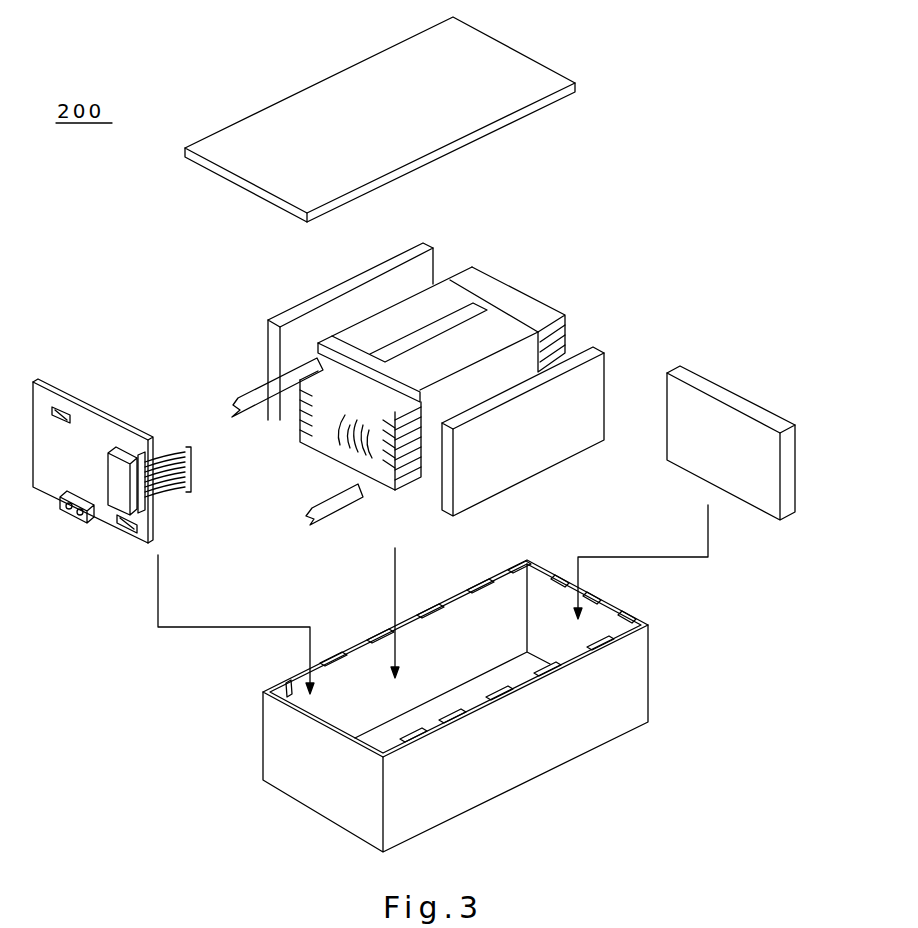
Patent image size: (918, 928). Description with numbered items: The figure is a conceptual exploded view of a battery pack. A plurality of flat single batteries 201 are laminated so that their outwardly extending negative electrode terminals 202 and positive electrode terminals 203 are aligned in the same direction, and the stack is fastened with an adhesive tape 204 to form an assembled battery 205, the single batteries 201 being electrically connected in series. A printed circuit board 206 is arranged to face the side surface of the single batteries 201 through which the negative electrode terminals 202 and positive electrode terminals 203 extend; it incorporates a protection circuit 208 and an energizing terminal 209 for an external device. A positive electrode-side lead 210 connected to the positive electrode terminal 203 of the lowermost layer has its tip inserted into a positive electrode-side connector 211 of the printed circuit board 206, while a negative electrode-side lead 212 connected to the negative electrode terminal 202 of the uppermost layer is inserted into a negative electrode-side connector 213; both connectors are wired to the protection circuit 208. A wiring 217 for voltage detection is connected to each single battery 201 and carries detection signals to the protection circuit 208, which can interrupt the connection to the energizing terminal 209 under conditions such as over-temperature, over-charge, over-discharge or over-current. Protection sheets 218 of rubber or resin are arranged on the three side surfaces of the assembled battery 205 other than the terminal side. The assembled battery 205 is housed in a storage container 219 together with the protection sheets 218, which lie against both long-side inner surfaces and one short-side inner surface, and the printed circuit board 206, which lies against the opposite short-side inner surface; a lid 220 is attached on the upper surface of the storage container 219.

The single battery 201 is at (435, 394).
The negative electrode terminal 202 is at (335, 378).
The positive electrode terminal 203 is at (398, 375).
The adhesive tape 204 is at (496, 330).
The assembled battery 205 is at (387, 306).
The printed circuit board 206 is at (125, 438).
The protection circuit 208 is at (120, 448).
The energizing terminal 209 is at (78, 512).
The positive electrode-side lead 210 is at (338, 520).
The positive electrode-side connector 211 is at (157, 525).
The negative electrode-side lead 212 is at (242, 394).
The negative electrode-side connector 213 is at (66, 408).
The wiring for voltage detection 217 is at (307, 452).
The protection sheet 218 is at (322, 297).
The storage container 219 is at (640, 672).
The lid 220 is at (527, 78).